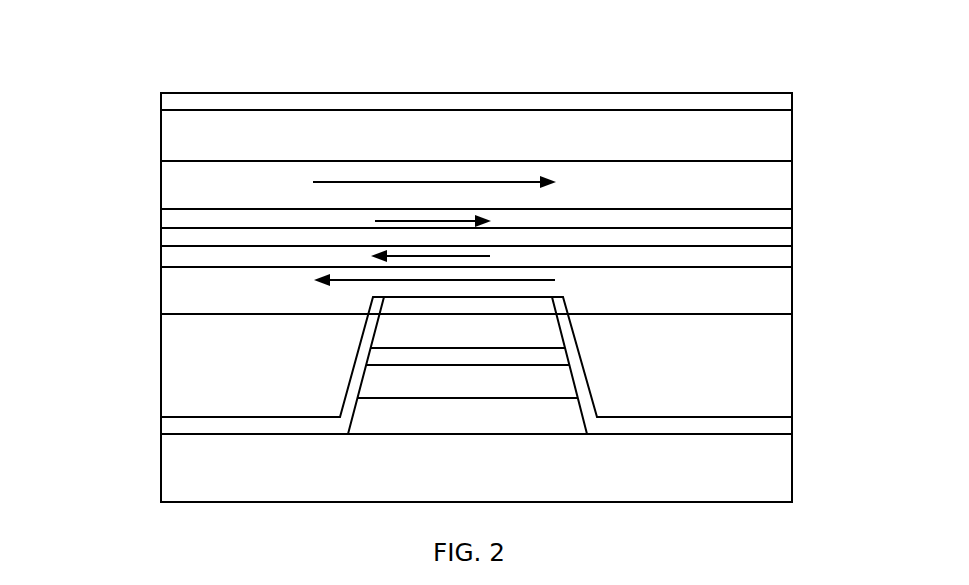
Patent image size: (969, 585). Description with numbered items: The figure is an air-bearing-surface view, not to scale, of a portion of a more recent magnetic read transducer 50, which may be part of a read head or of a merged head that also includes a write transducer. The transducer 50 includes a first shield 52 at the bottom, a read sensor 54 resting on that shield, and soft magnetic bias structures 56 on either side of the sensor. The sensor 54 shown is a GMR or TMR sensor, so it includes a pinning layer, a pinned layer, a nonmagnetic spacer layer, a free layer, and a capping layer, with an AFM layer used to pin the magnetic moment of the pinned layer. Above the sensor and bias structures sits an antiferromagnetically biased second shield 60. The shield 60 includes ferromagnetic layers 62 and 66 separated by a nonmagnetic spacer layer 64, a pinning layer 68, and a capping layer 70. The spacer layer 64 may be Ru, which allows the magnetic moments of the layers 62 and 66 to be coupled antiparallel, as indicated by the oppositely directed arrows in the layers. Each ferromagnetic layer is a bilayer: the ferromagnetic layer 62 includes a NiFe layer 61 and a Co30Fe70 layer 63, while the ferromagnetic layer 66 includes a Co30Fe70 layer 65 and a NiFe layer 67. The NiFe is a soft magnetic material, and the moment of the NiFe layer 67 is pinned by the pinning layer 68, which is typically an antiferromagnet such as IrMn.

The magnetic read transducer 50 is at (483, 53).
The shield 52 is at (793, 467).
The read sensor 54 is at (537, 457).
The soft magnetic bias structures 56 is at (161, 382).
The antiferromagnetically biased second shield 60 is at (68, 157).
The NiFe layer 61 is at (793, 302).
The ferromagnetic layer 62 is at (842, 245).
The Co30Fe70 layer 63 is at (793, 253).
The nonmagnetic spacer layer 64 is at (161, 238).
The Co30Fe70 layer 65 is at (161, 220).
The ferromagnetic layer 66 is at (110, 160).
The NiFe layer 67 is at (793, 195).
The pinning layer 68 is at (161, 142).
The capping layer 70 is at (793, 100).